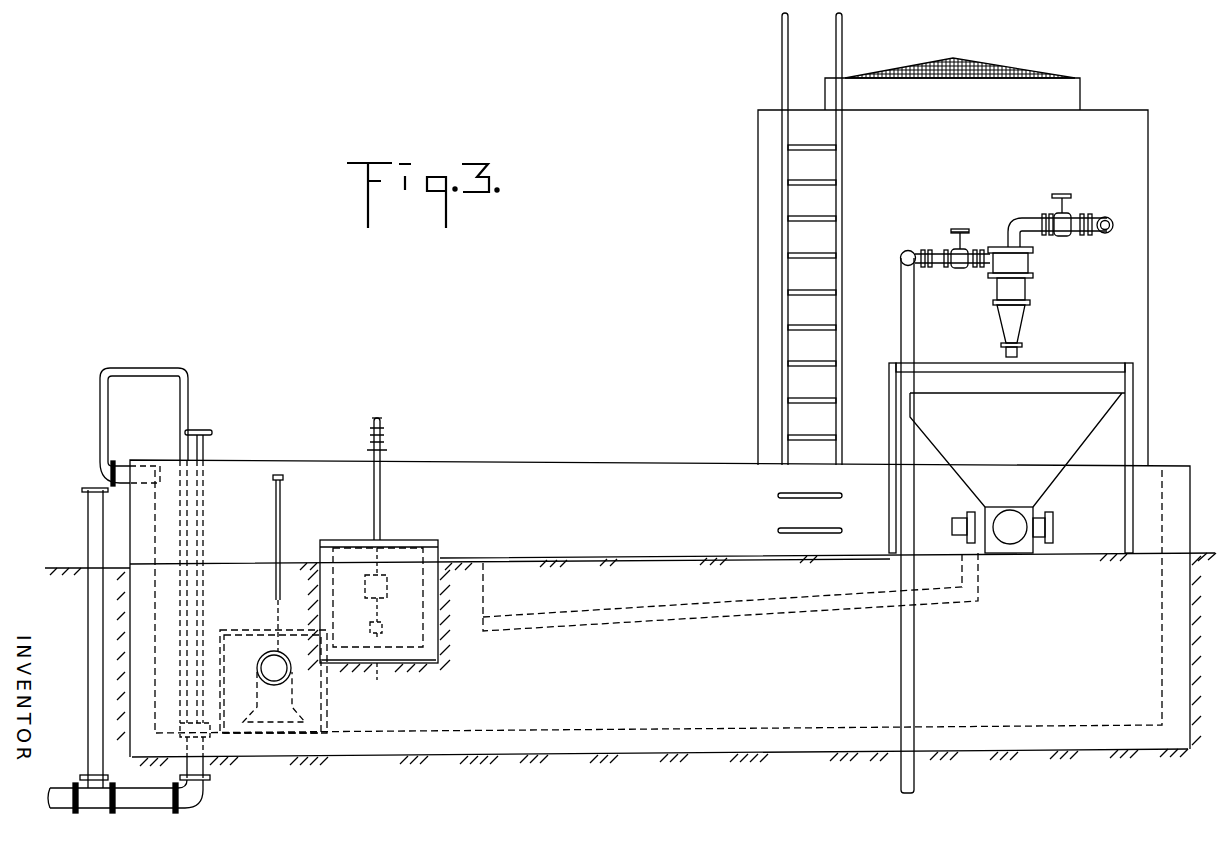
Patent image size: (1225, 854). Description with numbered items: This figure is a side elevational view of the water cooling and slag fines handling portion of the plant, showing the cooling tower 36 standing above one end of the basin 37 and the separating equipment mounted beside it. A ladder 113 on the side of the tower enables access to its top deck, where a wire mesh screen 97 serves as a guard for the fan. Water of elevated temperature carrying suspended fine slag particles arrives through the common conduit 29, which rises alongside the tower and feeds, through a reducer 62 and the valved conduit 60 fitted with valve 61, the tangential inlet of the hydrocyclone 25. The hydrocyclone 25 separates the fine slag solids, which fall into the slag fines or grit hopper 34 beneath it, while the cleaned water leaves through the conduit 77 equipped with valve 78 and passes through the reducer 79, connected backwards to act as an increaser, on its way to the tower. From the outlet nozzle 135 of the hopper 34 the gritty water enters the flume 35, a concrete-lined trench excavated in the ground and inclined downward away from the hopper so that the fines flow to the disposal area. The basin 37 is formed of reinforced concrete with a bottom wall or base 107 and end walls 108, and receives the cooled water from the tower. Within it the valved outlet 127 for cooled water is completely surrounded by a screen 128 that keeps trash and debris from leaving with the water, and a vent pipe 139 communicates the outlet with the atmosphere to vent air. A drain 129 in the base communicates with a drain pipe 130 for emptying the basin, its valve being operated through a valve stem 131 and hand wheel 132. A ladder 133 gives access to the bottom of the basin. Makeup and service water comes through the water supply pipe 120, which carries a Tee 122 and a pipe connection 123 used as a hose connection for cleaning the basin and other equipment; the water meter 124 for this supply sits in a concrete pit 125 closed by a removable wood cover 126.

The wire mesh screen 97 is at (1005, 68).
The cooling tower 36 is at (757, 182).
The ladder 113 is at (800, 220).
The reducer 62 is at (906, 250).
The valved conduit 60 is at (941, 265).
The valve 61 is at (960, 268).
The hydrocyclone 25 is at (1026, 262).
The valve 78 is at (1062, 236).
The valved conduit 77 is at (1082, 233).
The reducer 79 is at (1104, 218).
The common conduit 29 is at (902, 321).
The slag fines or grit hopper 34 is at (1075, 423).
The end walls 108 is at (1195, 490).
The outlet nozzle 135 is at (957, 526).
The ladder 133 is at (100, 386).
The hand wheel 132 is at (205, 430).
The valve stem 131 is at (200, 490).
The pipe connection 123 is at (381, 418).
The Tee 122 is at (383, 444).
The water supply pipe 120 is at (381, 482).
The vent pipe 139 is at (281, 496).
The removable wood cover 126 is at (410, 523).
The pit 125 is at (405, 567).
The screen 128 is at (233, 630).
The water meter 124 is at (384, 586).
The flume 35 is at (672, 620).
The drain 129 is at (210, 738).
The valved outlet 127 is at (278, 735).
The drain pipe 130 is at (137, 798).
The basin 37 is at (433, 708).
The bottom wall or base 107 is at (530, 758).